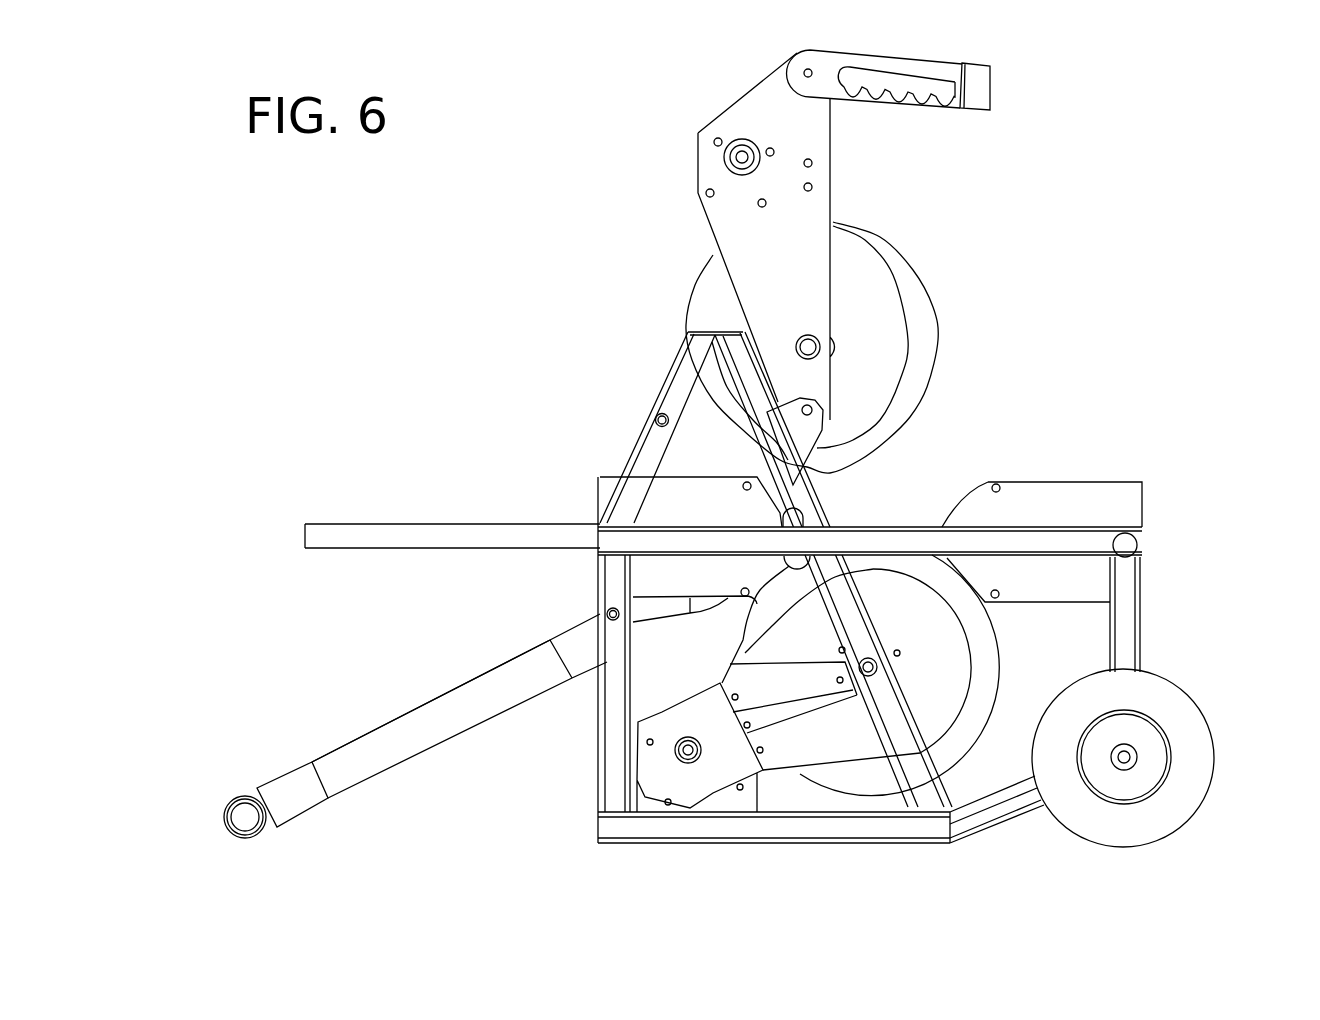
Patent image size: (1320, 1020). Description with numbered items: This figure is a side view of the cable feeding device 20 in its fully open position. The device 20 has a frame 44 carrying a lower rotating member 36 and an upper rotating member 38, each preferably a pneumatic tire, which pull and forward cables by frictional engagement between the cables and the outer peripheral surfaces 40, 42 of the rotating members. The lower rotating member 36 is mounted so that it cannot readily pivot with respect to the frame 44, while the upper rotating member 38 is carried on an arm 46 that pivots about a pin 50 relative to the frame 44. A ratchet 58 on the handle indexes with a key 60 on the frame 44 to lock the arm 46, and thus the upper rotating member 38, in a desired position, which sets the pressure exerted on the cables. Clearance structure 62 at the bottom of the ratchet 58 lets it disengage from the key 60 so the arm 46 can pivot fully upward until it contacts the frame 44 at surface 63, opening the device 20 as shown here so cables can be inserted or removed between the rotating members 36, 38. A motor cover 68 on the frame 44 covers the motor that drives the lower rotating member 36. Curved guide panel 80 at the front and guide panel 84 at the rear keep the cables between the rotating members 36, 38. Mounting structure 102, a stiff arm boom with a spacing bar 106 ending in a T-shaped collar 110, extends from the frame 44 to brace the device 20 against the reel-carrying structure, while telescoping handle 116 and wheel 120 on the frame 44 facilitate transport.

The cable feeding device 20 is at (621, 860).
The lower rotating member 36 is at (1022, 621).
The upper rotating member 38 is at (940, 312).
The outer peripheral surface 40 is at (990, 717).
The outer peripheral surface 42 is at (933, 383).
The frame 44 is at (902, 860).
The arm 46 is at (808, 222).
The pin 50 is at (814, 410).
The ratchet 58 is at (884, 108).
The key 60 is at (1137, 547).
The clearance structure 62 is at (993, 66).
The surface 63 is at (755, 348).
The motor cover 68 is at (698, 787).
The guide panel 80 is at (1077, 497).
The guide panel 84 is at (698, 500).
The mounting structure 102 is at (316, 746).
The spacing bar 106 is at (480, 708).
The T-shaped collar 110 is at (298, 806).
The handle 116 is at (438, 522).
The wheel 120 is at (1212, 764).